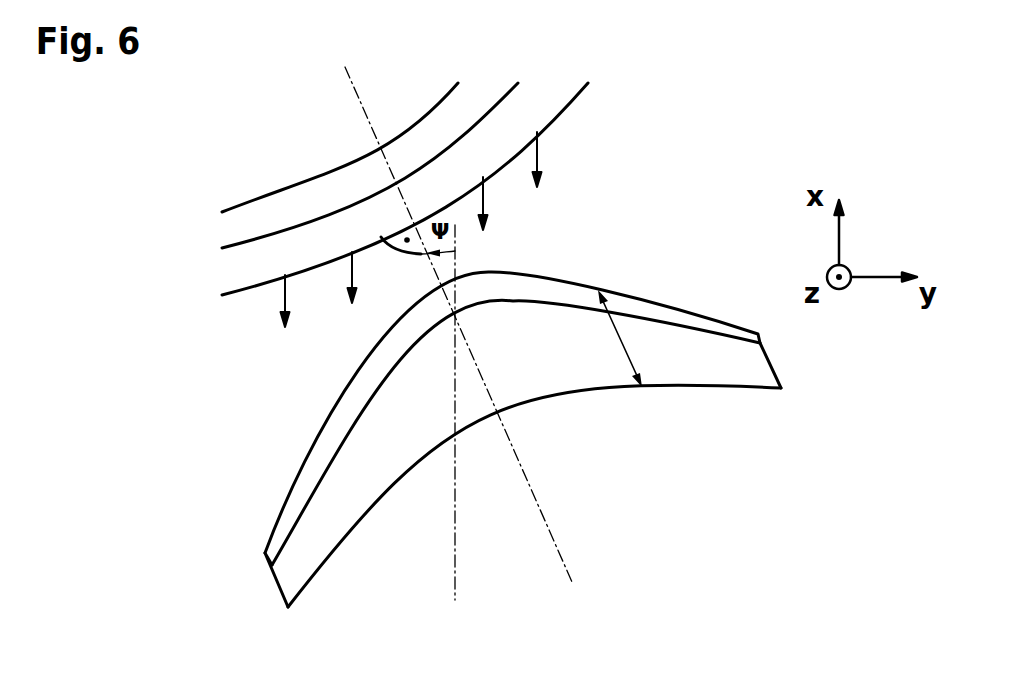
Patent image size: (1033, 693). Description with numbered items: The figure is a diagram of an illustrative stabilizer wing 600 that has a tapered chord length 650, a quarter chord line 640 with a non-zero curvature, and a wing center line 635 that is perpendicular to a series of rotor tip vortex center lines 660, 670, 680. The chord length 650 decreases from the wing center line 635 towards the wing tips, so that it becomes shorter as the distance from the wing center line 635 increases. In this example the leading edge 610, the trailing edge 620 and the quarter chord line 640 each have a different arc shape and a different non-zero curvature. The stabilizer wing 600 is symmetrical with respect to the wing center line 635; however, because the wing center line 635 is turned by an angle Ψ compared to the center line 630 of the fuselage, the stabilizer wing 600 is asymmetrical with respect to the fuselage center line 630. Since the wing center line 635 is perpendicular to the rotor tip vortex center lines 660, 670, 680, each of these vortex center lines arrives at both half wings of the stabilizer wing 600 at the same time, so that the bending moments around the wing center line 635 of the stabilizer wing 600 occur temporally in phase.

The stabilizer wing 600 is at (638, 222).
The leading edge 610 is at (331, 410).
The trailing edge 620 is at (603, 392).
The center line of the fuselage 630 is at (455, 562).
The wing center line 635 is at (552, 530).
The quarter chord line 640 is at (339, 450).
The chord length 650 is at (627, 347).
The rotor tip vortex center line 660 is at (247, 287).
The rotor tip vortex center line 670 is at (247, 240).
The rotor tip vortex center line 680 is at (250, 200).